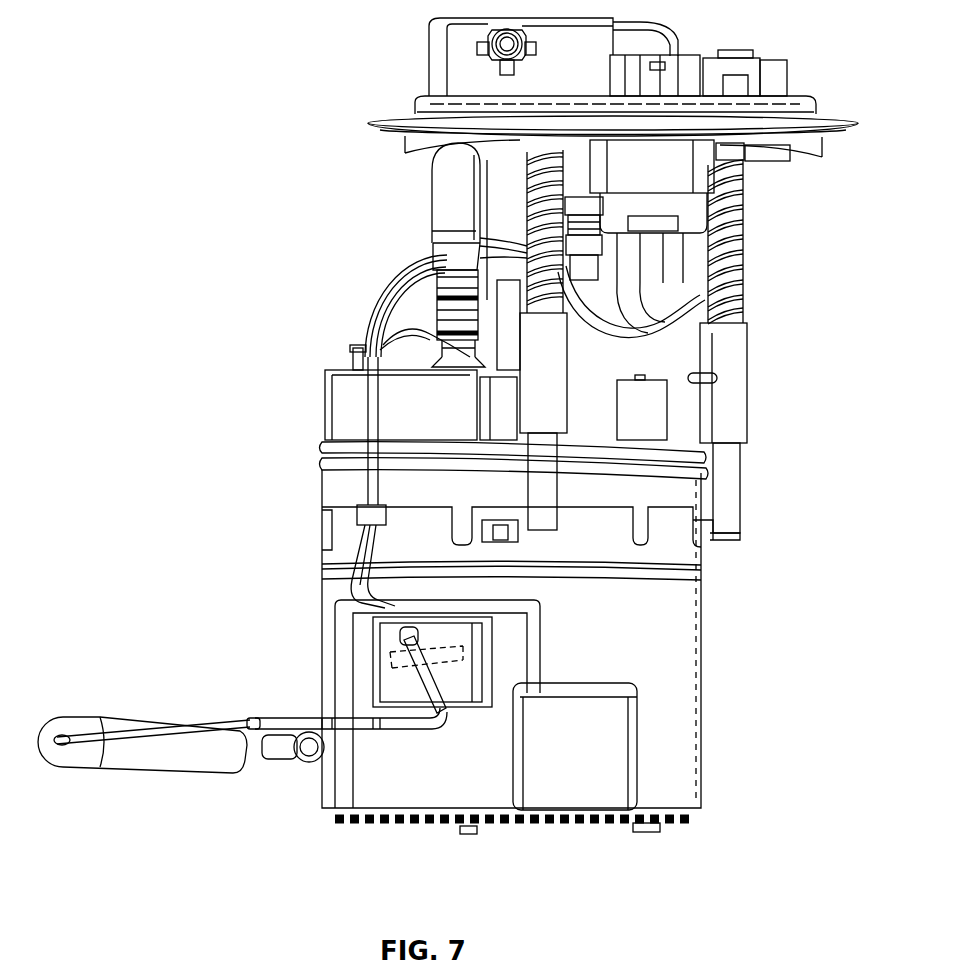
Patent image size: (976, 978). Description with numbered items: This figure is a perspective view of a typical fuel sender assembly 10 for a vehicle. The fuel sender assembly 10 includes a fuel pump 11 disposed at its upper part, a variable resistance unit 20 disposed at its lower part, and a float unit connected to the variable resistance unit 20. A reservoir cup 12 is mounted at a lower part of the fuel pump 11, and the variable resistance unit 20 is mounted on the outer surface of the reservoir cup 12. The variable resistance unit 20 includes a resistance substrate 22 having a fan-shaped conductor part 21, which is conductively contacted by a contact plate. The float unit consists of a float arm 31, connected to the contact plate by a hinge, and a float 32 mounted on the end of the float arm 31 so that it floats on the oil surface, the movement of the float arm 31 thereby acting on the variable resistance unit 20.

The fuel sender assembly 10 is at (821, 283).
The fuel pump 11 is at (634, 359).
The reservoir cup 12 is at (683, 495).
The variable resistance unit 20 is at (346, 660).
The fan-shaped conductor part 21 is at (448, 668).
The resistance substrate 22 is at (460, 685).
The float arm 31 is at (253, 732).
The float 32 is at (153, 757).